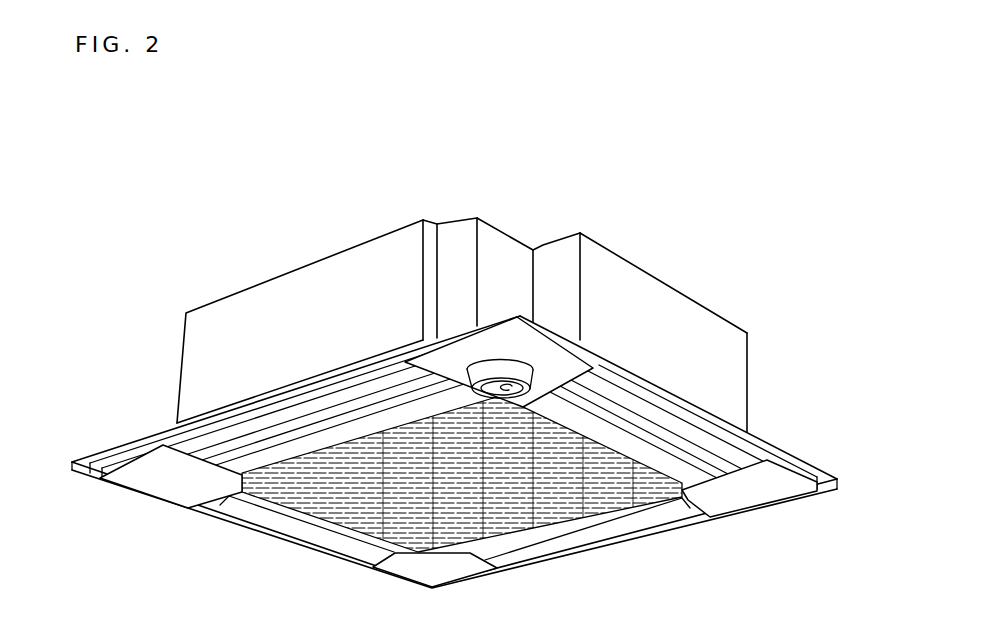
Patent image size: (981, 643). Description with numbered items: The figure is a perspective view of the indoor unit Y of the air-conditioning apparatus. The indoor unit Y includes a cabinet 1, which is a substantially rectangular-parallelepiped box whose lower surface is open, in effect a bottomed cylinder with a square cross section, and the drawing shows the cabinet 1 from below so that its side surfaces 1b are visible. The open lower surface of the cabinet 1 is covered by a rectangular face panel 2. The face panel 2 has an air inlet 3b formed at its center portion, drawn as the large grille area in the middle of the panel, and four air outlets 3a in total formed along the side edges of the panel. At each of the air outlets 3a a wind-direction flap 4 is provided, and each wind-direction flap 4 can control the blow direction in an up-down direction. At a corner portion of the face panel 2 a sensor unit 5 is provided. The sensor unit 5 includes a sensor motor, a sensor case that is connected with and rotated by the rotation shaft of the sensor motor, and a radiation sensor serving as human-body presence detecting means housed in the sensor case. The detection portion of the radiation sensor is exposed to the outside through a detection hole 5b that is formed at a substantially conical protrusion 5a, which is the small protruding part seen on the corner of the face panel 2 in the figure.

The indoor unit Y is at (197, 183).
The cabinet 1 is at (357, 295).
The side surfaces 1b is at (690, 323).
The face panel 2 is at (337, 370).
The air outlets 3a is at (290, 418).
The air inlet 3b is at (487, 497).
The wind-direction flaps 4 is at (263, 432).
The sensor unit 5 is at (700, 158).
The substantially conical protrusion 5a is at (503, 363).
The detection hole 5b is at (520, 388).